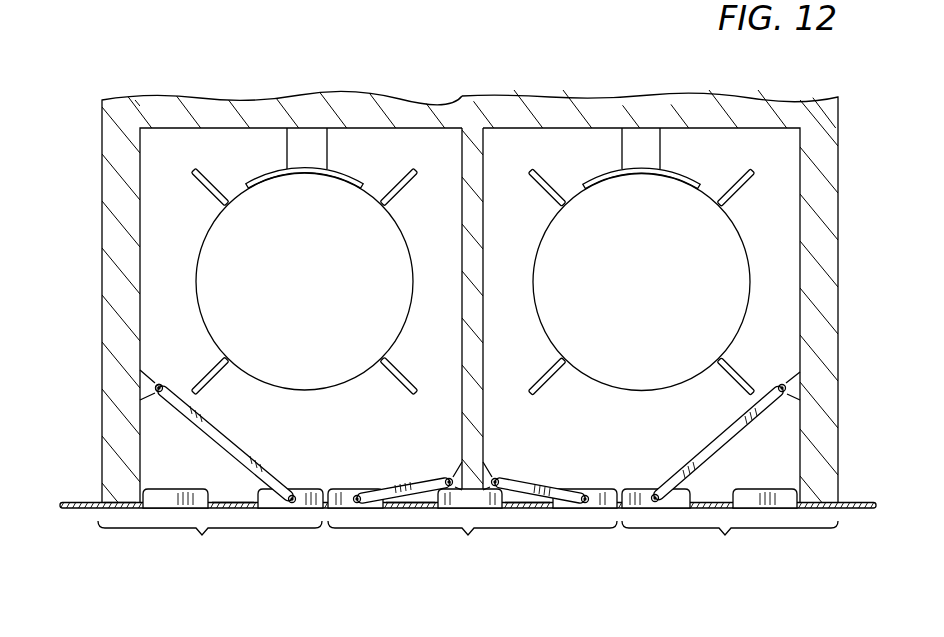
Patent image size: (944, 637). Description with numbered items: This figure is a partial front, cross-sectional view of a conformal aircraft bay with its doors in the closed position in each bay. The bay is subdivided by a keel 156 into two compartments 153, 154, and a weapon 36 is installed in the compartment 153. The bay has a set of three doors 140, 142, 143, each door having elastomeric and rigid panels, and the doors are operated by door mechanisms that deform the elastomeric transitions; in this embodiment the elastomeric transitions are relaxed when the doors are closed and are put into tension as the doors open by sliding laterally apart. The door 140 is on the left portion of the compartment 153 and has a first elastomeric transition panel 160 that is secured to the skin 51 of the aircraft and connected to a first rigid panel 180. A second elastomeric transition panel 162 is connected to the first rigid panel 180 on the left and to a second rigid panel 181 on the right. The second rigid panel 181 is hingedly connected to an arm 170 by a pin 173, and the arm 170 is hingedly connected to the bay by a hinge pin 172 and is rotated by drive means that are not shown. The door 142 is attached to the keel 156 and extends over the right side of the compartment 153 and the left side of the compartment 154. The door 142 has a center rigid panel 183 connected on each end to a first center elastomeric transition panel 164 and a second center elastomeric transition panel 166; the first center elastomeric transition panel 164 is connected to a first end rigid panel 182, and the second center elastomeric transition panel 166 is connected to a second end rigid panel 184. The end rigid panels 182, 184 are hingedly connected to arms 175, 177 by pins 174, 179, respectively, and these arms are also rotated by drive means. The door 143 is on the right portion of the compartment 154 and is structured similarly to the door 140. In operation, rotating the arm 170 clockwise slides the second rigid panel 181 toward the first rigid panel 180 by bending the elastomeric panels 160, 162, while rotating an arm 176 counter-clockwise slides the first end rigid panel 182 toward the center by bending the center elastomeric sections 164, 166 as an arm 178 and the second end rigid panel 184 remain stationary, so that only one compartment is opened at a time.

The weapon 36 is at (319, 302).
The skin 51 is at (82, 502).
The door 140 is at (202, 537).
The door 142 is at (467, 536).
The door 143 is at (725, 536).
The compartment 153 is at (410, 138).
The compartment 154 is at (707, 152).
The keel 156 is at (475, 156).
The first elastomeric transition panel 160 is at (118, 510).
The second elastomeric transition panel 162 is at (237, 510).
The first center elastomeric transition panel 164 is at (420, 510).
The second center elastomeric transition panel 166 is at (533, 510).
The arm 170 is at (228, 438).
The hinge pin 172 is at (147, 372).
The pin 173 is at (291, 494).
The pin 174 is at (357, 494).
The arm 175 is at (418, 481).
The arm 176 is at (448, 475).
The arm 177 is at (496, 476).
The arm 178 is at (537, 482).
The pin 179 is at (592, 490).
The first rigid panel 180 is at (175, 510).
The second rigid panel 181 is at (303, 510).
The first end rigid panel 182 is at (352, 510).
The center rigid panel 183 is at (482, 510).
The second end rigid panel 184 is at (597, 510).